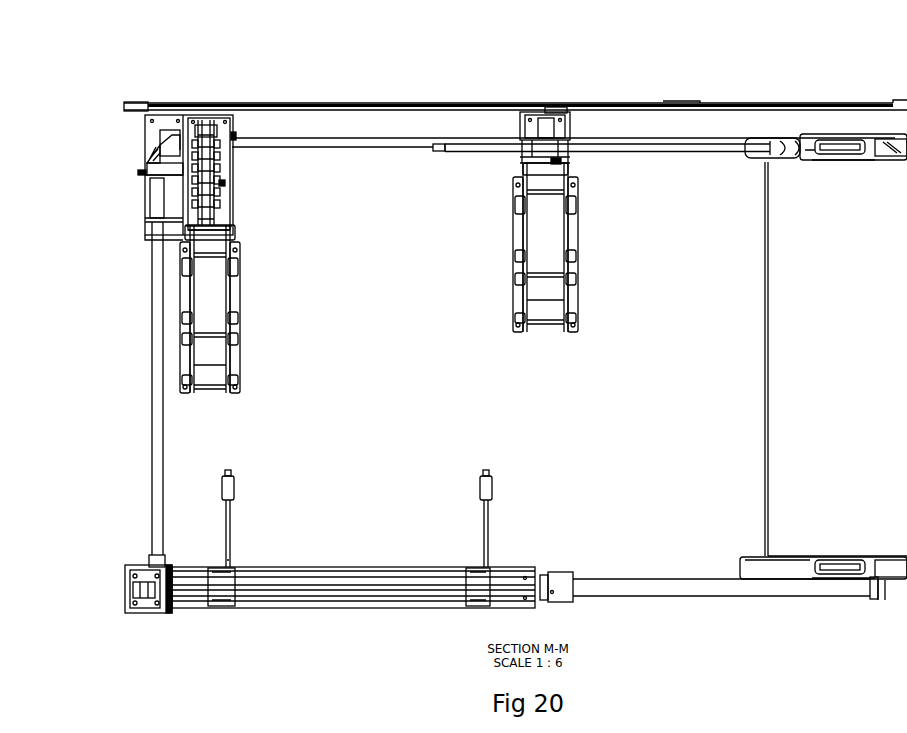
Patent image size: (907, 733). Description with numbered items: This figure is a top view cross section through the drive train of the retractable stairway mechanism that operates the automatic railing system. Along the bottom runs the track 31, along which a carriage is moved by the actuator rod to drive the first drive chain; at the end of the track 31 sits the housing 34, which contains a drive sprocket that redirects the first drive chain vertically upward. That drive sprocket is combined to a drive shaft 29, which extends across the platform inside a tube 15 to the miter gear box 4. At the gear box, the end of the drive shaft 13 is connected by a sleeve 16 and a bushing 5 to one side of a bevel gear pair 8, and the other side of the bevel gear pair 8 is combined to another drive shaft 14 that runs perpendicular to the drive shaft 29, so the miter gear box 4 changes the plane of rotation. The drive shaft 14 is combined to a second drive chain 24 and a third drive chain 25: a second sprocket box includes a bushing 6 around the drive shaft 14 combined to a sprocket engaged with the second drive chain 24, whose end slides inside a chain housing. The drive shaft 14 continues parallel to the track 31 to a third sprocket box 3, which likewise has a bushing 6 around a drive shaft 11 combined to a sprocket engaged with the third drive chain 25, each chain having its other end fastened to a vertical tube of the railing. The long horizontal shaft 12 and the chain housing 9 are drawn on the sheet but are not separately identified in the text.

The third sprocket box 3 is at (561, 124).
The miter gear box 4 is at (157, 135).
The bushing 5 is at (140, 173).
The bushing 6 is at (223, 133).
The bevel gear pair 8 is at (157, 166).
The chain housing 9 is at (200, 143).
The drive shaft 11 is at (520, 138).
The drive shaft 12 is at (325, 145).
The drive shaft 13 is at (148, 150).
The drive shaft 14 is at (234, 136).
The tube 15 is at (156, 485).
The sleeve 16 is at (157, 195).
The second drive chain 24 is at (225, 182).
The third drive chain 25 is at (563, 163).
The drive shaft 29 is at (153, 562).
The track 31 is at (369, 608).
The housing 34 is at (146, 610).